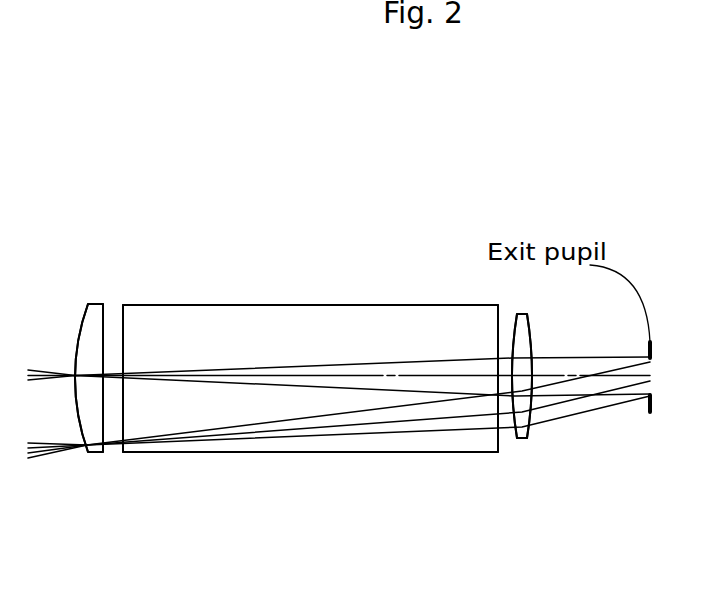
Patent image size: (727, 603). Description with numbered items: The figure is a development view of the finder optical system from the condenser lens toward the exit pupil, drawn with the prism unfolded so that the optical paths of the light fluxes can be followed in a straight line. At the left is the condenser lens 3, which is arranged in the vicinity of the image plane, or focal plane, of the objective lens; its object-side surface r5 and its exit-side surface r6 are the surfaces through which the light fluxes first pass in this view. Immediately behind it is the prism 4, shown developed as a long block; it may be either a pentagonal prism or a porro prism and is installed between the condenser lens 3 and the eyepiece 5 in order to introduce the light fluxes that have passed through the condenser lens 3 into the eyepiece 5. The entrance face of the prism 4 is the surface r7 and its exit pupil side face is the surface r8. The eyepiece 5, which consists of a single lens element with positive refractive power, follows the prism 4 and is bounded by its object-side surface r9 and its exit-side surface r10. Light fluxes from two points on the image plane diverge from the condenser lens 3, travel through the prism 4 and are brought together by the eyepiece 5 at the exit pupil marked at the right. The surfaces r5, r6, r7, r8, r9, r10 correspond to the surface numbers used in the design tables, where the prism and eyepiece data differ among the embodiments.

The condenser lens 3 is at (91, 331).
The prism 4 is at (273, 322).
The eyepiece 5 is at (521, 342).
The condenser lens object-side surface r5 is at (77, 407).
The condenser lens exit-side surface r6 is at (103, 427).
The prism object-side surface r7 is at (125, 408).
The prism exit pupil side surface r8 is at (498, 423).
The eyepiece object-side surface r9 is at (510, 438).
The eyepiece exit-side surface r10 is at (528, 433).